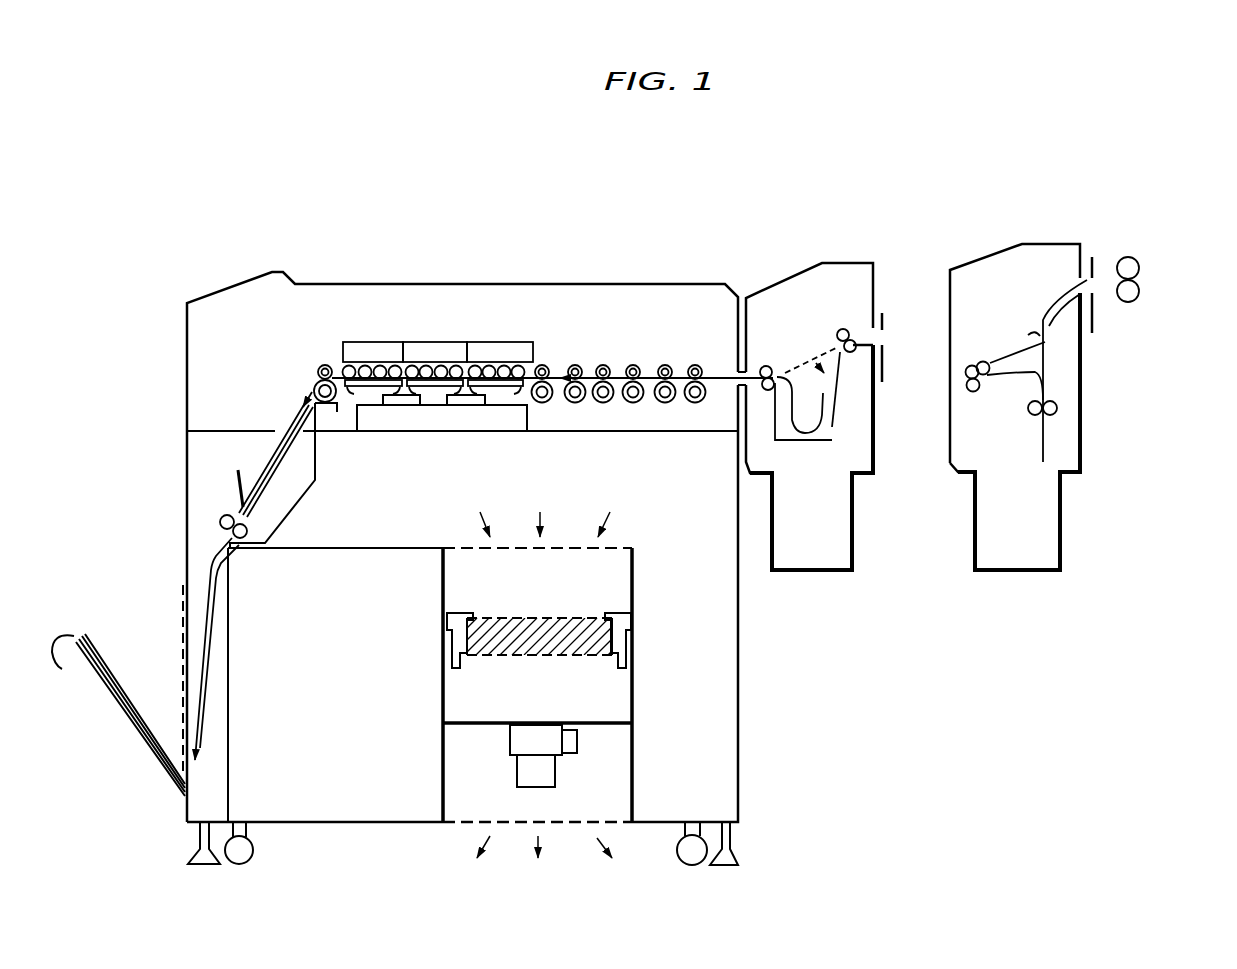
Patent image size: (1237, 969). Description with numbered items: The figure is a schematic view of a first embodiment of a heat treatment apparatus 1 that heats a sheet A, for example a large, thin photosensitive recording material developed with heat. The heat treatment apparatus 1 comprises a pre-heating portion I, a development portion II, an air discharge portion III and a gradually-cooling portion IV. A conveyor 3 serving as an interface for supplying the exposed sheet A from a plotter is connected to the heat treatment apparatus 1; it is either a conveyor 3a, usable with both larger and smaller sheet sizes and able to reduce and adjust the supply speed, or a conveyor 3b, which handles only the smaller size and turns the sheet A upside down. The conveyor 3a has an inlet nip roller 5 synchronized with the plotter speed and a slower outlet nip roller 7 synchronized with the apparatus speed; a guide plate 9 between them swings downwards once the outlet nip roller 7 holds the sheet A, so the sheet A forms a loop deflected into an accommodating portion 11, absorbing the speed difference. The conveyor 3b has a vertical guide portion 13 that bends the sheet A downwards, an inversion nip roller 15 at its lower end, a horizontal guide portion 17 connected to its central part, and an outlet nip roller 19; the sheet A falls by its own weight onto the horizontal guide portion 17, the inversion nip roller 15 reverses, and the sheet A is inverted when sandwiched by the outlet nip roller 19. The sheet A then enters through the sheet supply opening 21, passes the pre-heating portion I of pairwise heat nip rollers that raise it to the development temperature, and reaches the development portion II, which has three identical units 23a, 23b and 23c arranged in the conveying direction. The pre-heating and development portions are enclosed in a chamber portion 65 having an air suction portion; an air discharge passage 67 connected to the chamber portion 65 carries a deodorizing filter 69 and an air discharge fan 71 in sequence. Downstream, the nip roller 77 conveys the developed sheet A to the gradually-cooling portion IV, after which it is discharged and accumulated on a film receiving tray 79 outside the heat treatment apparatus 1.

The heat treatment apparatus 1 is at (583, 213).
The conveyor 3 is at (951, 616).
The conveyor 3a is at (836, 575).
The conveyor 3b is at (1027, 573).
The inlet nip roller 5 is at (846, 330).
The outlet nip roller 7 is at (766, 365).
The guide plate 9 is at (832, 395).
The accommodating portion 11 is at (786, 441).
The vertical guide portion 13 is at (1050, 292).
The inversion nip roller 15 is at (1058, 409).
The horizontal guide portion 17 is at (988, 362).
The outlet nip roller 19 is at (975, 388).
The sheet supply opening 21 is at (736, 378).
The unit 23a is at (485, 338).
The unit 23b is at (421, 338).
The unit 23c is at (361, 338).
The chamber portion 65 is at (373, 490).
The air discharge passage 67 is at (442, 700).
The deodorizing filter 69 is at (553, 618).
The air discharge fan 71 is at (557, 772).
The nip roller 77 is at (318, 368).
The film receiving tray 79 is at (171, 597).
The sheet A is at (153, 611).
The pre-heating portion I is at (620, 346).
The development portion II is at (439, 276).
The air discharge portion III is at (650, 687).
The gradually-cooling portion IV is at (262, 452).